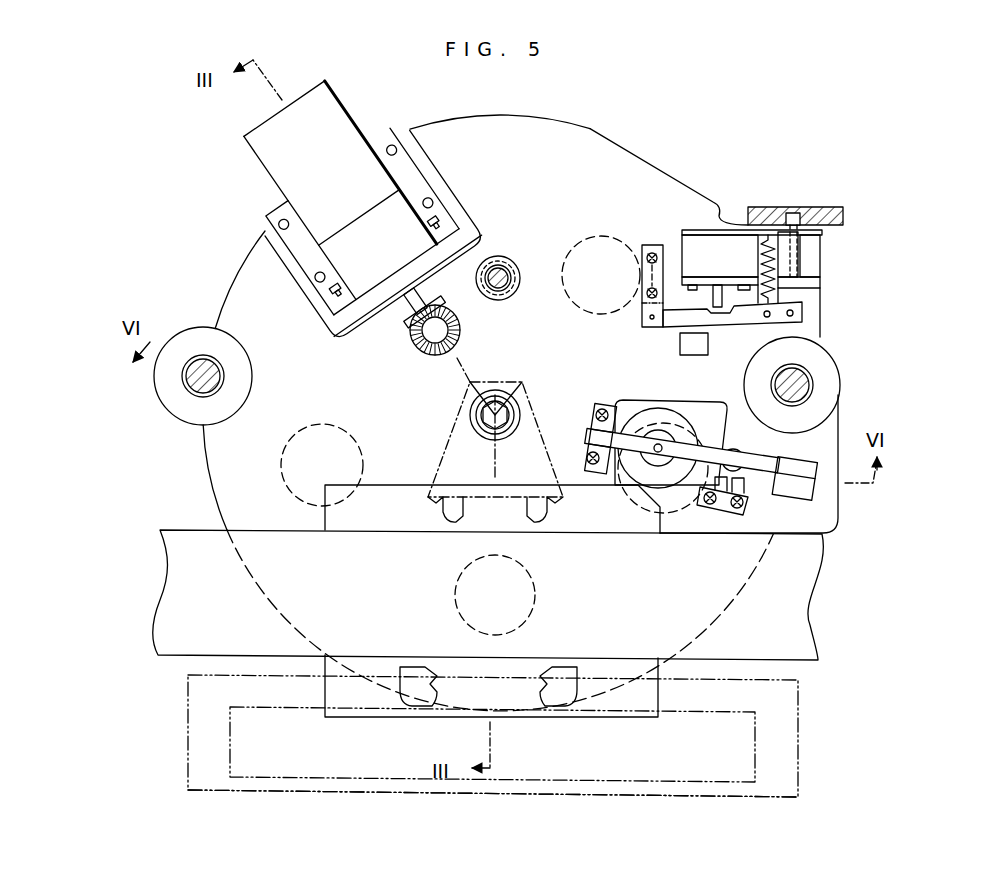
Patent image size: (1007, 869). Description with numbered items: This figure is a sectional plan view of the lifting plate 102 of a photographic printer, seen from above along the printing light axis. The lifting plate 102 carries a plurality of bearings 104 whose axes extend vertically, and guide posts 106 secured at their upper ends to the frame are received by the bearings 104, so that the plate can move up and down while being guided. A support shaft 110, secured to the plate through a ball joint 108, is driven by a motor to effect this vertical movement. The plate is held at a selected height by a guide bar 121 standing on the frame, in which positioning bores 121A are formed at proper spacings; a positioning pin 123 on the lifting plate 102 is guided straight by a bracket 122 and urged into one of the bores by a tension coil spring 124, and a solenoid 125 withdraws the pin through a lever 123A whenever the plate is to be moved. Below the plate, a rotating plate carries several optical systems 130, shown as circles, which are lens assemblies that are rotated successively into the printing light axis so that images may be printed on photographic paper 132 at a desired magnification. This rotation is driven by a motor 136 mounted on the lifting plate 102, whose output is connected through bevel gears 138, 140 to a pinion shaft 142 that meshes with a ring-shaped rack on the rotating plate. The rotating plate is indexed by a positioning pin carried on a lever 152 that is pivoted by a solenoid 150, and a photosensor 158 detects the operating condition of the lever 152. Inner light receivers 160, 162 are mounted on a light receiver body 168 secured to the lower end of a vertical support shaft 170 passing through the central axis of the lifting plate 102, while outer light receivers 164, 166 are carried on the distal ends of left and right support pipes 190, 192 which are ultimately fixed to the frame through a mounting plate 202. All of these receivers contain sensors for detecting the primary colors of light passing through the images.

The lifting plate 102 is at (552, 130).
The bearings 104 is at (191, 329).
The guide posts 106 is at (185, 390).
The ball joint 108 is at (512, 264).
The support shaft 110 is at (502, 287).
The guide bar 121 is at (797, 212).
The positioning bores 121A is at (822, 238).
The bracket 122 is at (802, 268).
The positioning pin 123 is at (823, 278).
The lever 123A is at (670, 312).
The tension coil spring 124 is at (762, 258).
The solenoid 125 is at (697, 240).
The optical systems 130 is at (594, 236).
The photographic paper 132 is at (822, 576).
The motor 136 is at (346, 110).
The bevel gear 138 is at (412, 333).
The bevel gear 140 is at (458, 342).
The pinion shaft 142 is at (448, 331).
The solenoid 150 is at (648, 412).
The lever 152 is at (764, 464).
The photosensor 158 is at (692, 355).
The inner light receiver 160 is at (440, 520).
The inner light receiver 162 is at (548, 520).
The outer light receiver 164 is at (430, 667).
The outer light receiver 166 is at (561, 667).
The light receiver body 168 is at (442, 448).
The support shaft 170 is at (503, 408).
The support pipe 190 is at (240, 674).
The support pipe 192 is at (760, 678).
The mounting plate 202 is at (692, 798).